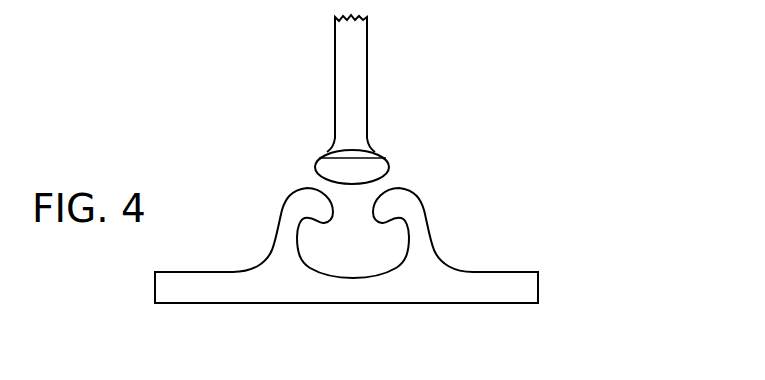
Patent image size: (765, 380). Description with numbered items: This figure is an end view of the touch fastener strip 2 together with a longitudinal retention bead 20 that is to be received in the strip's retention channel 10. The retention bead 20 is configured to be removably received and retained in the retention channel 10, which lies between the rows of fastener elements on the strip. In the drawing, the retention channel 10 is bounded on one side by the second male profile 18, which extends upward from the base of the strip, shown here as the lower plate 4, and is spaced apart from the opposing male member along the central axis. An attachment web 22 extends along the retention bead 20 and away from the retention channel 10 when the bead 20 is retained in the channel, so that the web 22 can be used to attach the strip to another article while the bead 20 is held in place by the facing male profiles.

The fastener strip 2 is at (482, 118).
The base plate 4 is at (431, 290).
The retention channel 10 is at (342, 245).
The second male profile 18 is at (427, 228).
The retention bead 20 is at (323, 167).
The attachment web 22 is at (360, 52).